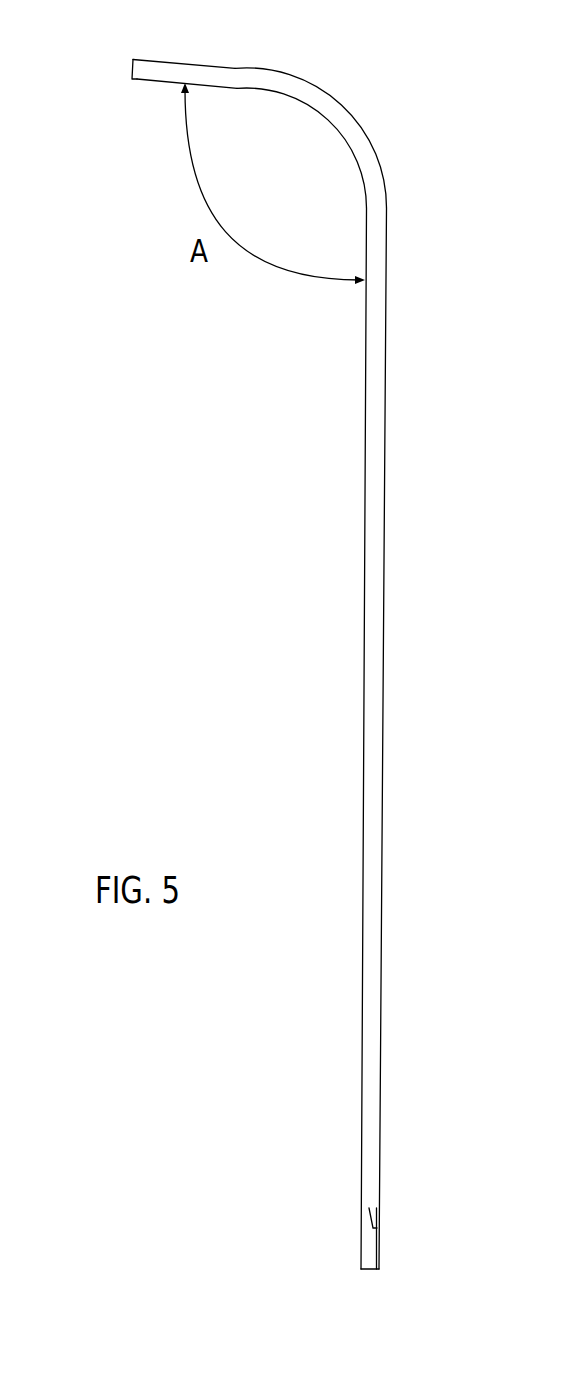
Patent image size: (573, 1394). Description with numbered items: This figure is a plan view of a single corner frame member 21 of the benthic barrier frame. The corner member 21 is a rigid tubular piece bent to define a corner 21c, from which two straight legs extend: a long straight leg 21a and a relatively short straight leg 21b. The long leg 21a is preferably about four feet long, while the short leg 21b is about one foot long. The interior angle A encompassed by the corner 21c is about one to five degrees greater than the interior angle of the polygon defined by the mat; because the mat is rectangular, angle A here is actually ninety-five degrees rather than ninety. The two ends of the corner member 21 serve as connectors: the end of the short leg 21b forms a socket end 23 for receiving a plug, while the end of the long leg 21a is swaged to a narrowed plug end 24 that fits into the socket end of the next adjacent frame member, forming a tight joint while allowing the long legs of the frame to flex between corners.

The corner frame member 21 is at (273, 634).
The long straight leg 21a is at (375, 521).
The short straight leg 21b is at (180, 68).
The corner 21c is at (349, 108).
The frame socket end 23 is at (132, 70).
The frame plug end 24 is at (373, 1252).